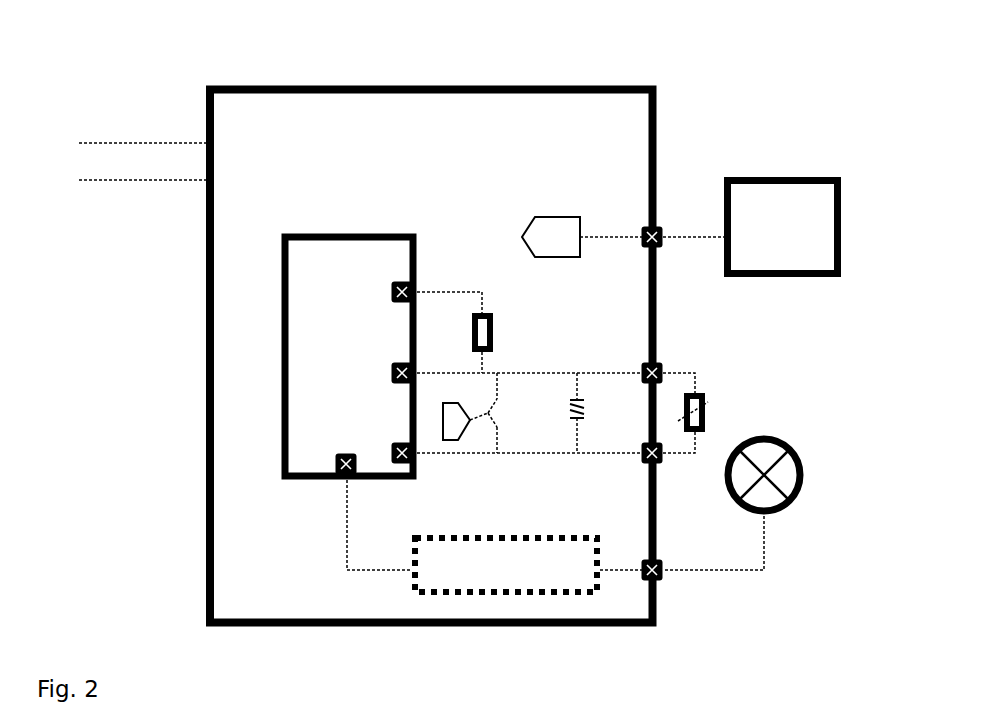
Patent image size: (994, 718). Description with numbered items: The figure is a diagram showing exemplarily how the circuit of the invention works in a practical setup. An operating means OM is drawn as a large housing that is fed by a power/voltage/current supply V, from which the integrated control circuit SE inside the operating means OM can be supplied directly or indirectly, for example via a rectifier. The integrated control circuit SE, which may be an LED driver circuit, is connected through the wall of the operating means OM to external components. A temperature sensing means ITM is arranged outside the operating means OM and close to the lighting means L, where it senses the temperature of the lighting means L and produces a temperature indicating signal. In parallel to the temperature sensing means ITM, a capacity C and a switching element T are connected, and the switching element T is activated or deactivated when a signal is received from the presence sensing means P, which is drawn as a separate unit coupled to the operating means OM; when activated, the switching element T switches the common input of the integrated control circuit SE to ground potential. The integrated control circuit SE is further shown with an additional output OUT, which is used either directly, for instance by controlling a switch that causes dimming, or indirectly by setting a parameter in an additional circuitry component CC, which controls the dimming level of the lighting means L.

The operating means OM is at (590, 90).
The power/voltage/current supply V is at (127, 162).
The integrated control circuit SE is at (349, 356).
The output OUT is at (368, 494).
The presence sensing means P is at (783, 227).
The switching element T is at (479, 413).
The capacity C is at (591, 413).
The temperature sensing means ITM is at (715, 410).
The lighting means L is at (743, 504).
The additional circuitry component CC is at (528, 565).